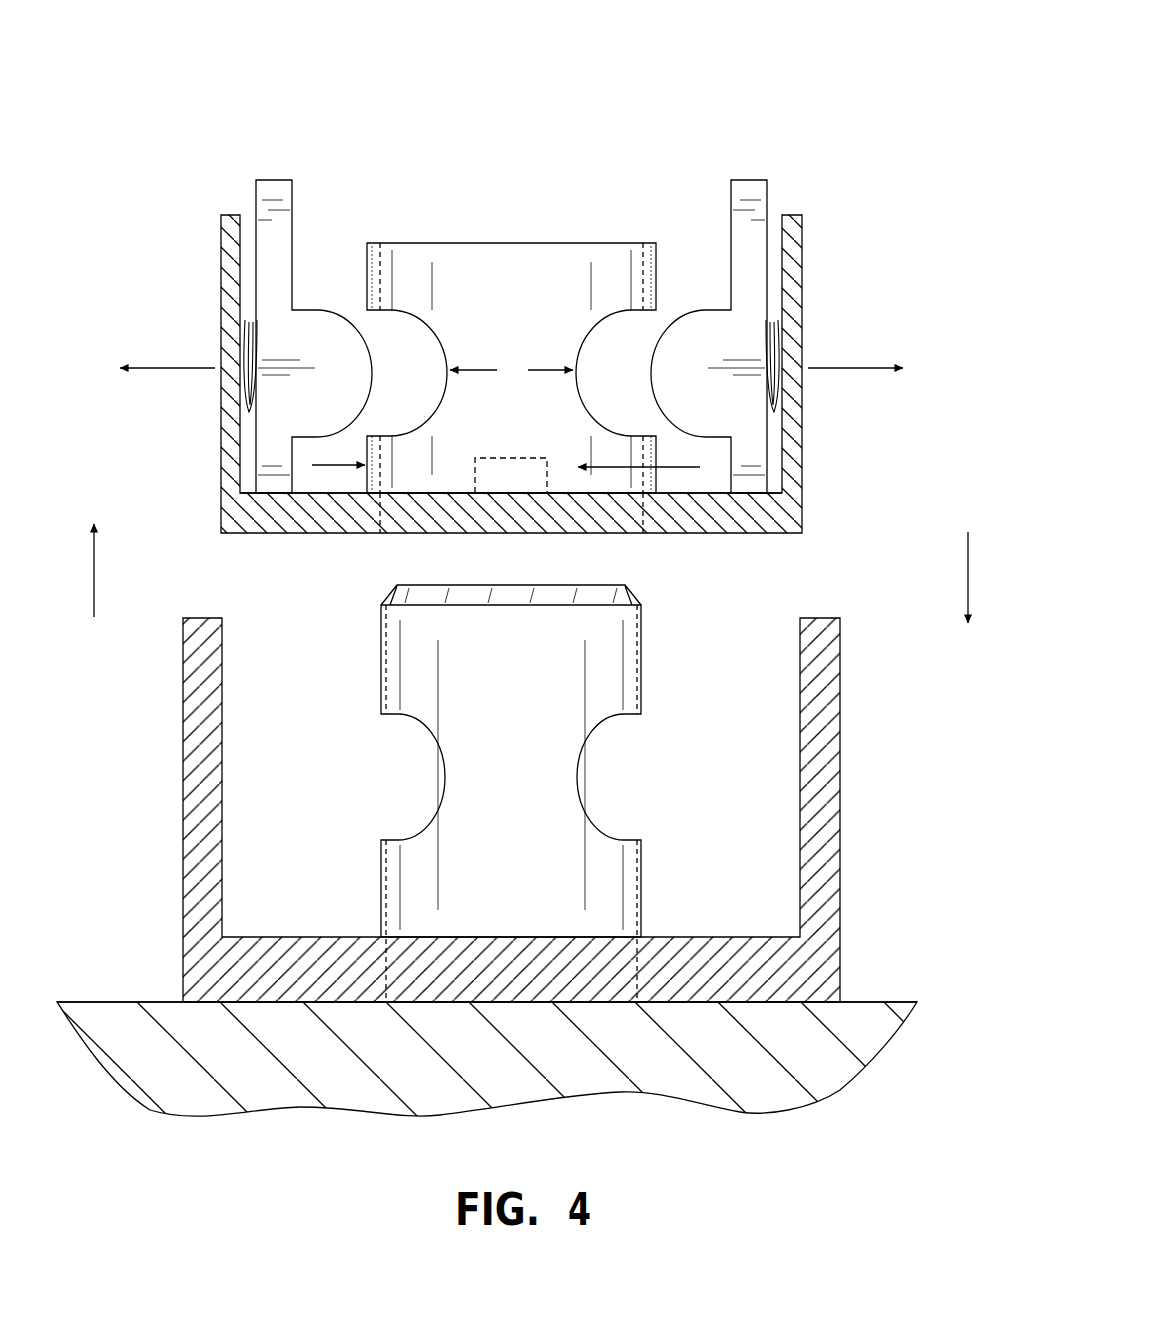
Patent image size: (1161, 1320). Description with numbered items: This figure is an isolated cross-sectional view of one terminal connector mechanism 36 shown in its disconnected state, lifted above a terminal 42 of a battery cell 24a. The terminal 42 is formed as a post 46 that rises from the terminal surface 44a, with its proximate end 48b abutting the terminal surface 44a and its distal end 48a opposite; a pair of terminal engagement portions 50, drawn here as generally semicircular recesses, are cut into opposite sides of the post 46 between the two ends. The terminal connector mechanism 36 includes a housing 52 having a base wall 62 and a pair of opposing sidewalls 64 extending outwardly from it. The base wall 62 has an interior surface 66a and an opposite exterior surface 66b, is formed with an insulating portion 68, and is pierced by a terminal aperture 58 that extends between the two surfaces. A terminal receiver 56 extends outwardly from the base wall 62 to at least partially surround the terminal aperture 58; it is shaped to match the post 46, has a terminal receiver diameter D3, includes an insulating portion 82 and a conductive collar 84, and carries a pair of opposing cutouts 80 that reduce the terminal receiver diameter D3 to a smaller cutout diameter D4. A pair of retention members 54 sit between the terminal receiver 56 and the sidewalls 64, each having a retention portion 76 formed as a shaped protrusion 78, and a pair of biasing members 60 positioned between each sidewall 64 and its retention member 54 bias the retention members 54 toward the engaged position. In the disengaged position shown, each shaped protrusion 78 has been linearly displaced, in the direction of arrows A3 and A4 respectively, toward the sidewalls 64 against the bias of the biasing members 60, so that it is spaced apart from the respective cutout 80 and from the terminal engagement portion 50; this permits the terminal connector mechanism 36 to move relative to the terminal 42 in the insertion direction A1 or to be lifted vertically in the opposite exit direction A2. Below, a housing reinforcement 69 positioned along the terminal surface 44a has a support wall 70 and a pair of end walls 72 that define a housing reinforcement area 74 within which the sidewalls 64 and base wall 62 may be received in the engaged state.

The support surface 24a is at (495, 1011).
The terminal connector mechanism 36 is at (815, 76).
The terminal 42 is at (610, 574).
The terminal surface 44a is at (802, 1001).
The post 46 is at (541, 769).
The distal end 48a is at (502, 583).
The proximate end 48b is at (532, 937).
The terminal engagement portion 50 is at (440, 407).
The housing 52 is at (512, 367).
The retention member 54 is at (519, 292).
The terminal receiver 56 is at (524, 352).
The terminal aperture 58 is at (645, 505).
The biasing member 60 is at (248, 338).
The base wall 62 is at (803, 505).
The sidewall 64 is at (228, 276).
The interior surface 66a is at (247, 490).
The exterior surface 66b is at (335, 535).
The insulating portion 68 is at (357, 515).
The housing reinforcement 69 is at (509, 792).
The support wall 70 is at (302, 962).
The end wall 72 is at (182, 770).
The housing reinforcement area 74 is at (292, 653).
The retention portion 76 is at (272, 437).
The shaped protrusion 78 is at (357, 327).
The cutout 80 is at (438, 316).
The insulating portion 82 is at (560, 484).
The conductive collar 84 is at (528, 458).
The insertion direction A1 is at (967, 565).
The exit direction A2 is at (94, 575).
The spreading direction arrow A3 is at (835, 375).
The spreading direction arrow A4 is at (137, 375).
The terminal receiver diameter D3 is at (656, 470).
The cutout diameter D4 is at (511, 373).